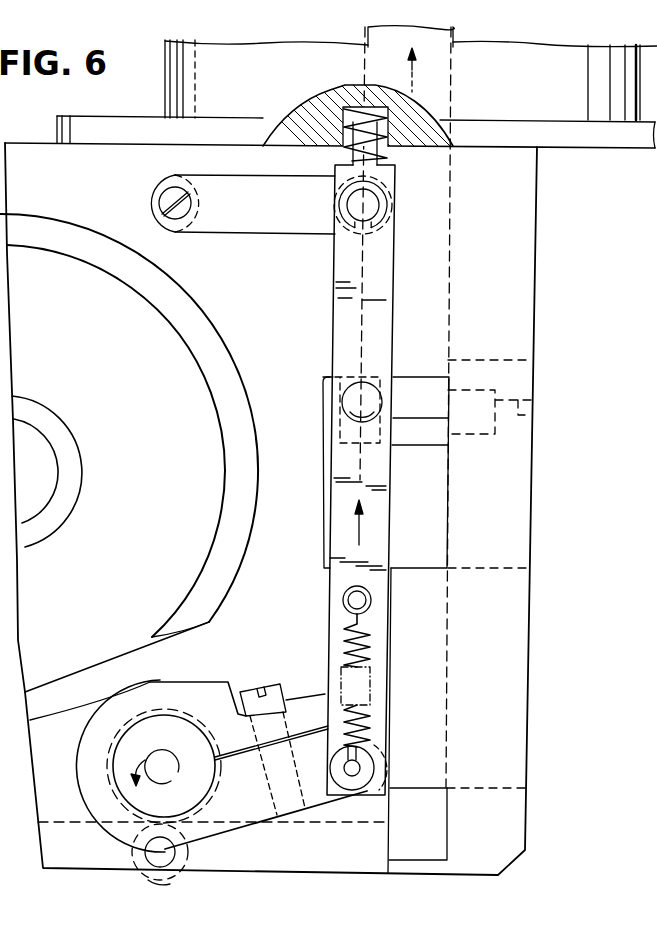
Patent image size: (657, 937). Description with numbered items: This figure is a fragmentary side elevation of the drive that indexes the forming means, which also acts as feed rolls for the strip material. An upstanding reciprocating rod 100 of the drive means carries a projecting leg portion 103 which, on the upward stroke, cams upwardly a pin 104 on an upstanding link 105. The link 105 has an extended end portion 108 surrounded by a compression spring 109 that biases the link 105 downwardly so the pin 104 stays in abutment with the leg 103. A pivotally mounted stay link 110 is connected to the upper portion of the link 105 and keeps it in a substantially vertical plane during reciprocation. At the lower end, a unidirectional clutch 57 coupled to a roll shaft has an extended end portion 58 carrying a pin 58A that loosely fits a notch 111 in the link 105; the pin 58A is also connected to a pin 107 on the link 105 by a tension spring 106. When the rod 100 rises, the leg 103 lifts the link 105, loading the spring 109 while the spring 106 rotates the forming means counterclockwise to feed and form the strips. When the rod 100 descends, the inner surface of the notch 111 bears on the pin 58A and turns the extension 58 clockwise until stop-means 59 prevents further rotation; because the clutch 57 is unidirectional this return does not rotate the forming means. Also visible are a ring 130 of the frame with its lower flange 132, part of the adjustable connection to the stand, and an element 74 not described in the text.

The unidirectional clutch 57 is at (74, 784).
The extended end portion 58 is at (298, 705).
The pin 58A is at (358, 768).
The stop-means 59 is at (235, 689).
The switch 74 is at (522, 403).
The reciprocating rod 100 is at (366, 40).
The projecting leg portion 103 is at (401, 440).
The pin 104 is at (345, 398).
The upstanding link 105 is at (332, 585).
The tension spring 106 is at (342, 641).
The pin 107 is at (345, 602).
The extended end portion 108 is at (345, 153).
The compression spring 109 is at (386, 154).
The stay link 110 is at (258, 235).
The notch 111 is at (357, 804).
The ring 130 is at (165, 90).
The lower flange 132 is at (57, 130).